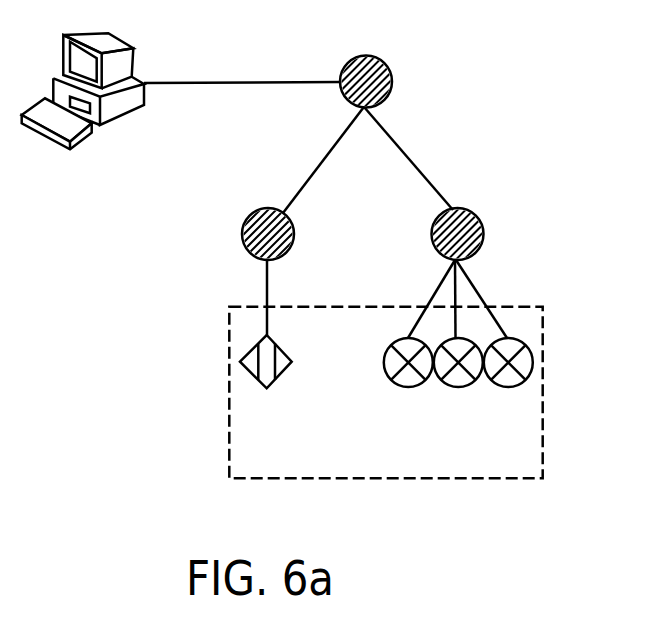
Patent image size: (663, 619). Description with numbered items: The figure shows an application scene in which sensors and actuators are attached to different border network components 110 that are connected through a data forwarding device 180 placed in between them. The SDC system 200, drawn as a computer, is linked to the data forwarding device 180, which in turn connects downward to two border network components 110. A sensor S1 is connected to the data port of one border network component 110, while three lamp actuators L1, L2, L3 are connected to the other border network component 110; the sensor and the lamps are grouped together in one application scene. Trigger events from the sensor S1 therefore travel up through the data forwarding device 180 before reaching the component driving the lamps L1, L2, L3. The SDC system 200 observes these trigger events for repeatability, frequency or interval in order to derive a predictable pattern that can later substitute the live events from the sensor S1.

The SDC system 200 is at (102, 183).
The data forwarding device 180 is at (393, 82).
The border network component 110 is at (387, 234).
The sensor S1 is at (266, 379).
The lamp L1 is at (408, 380).
The lamp L2 is at (458, 380).
The lamp L3 is at (508, 380).